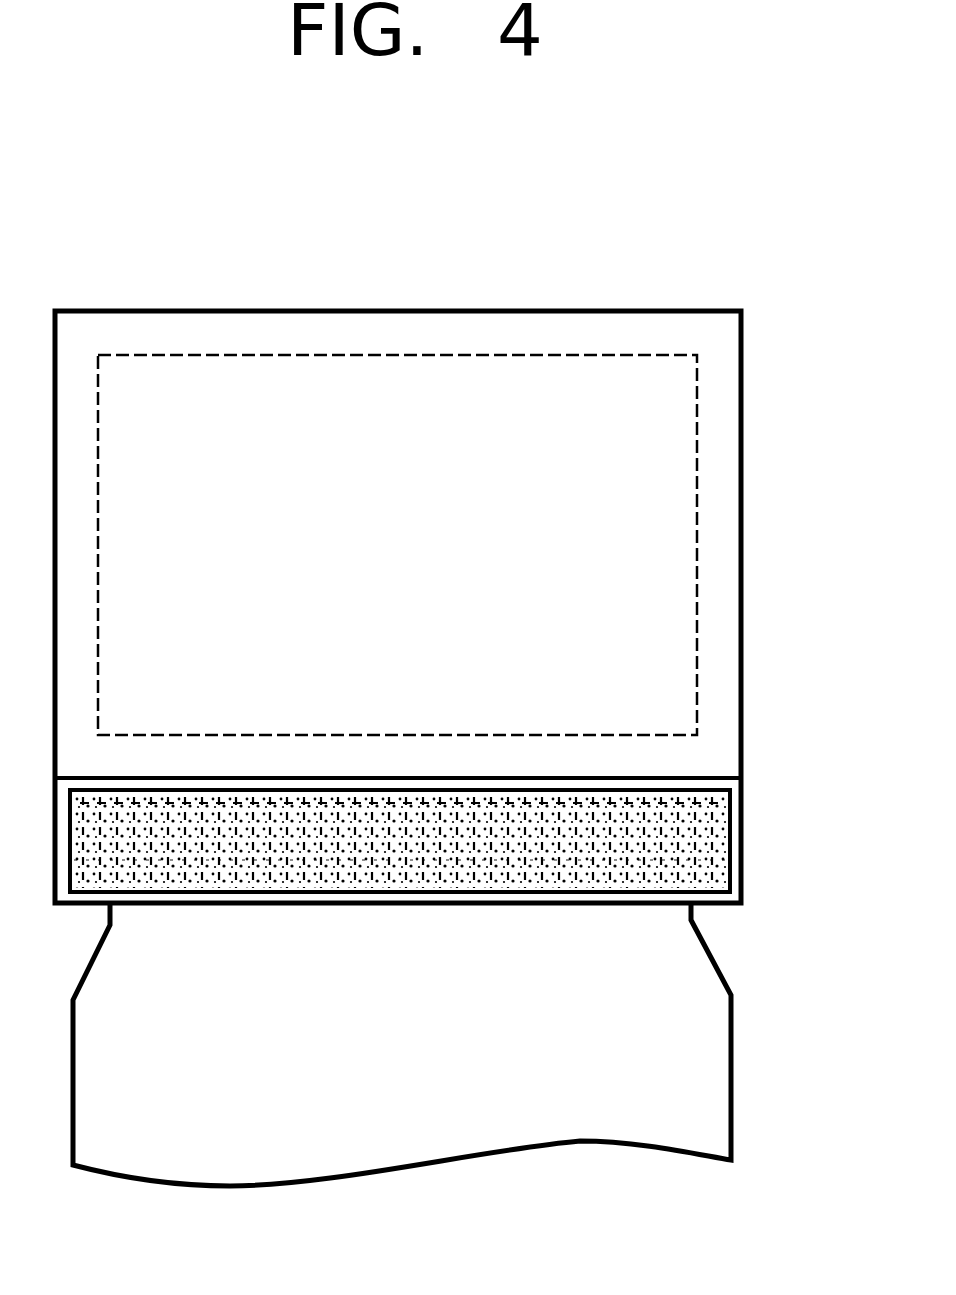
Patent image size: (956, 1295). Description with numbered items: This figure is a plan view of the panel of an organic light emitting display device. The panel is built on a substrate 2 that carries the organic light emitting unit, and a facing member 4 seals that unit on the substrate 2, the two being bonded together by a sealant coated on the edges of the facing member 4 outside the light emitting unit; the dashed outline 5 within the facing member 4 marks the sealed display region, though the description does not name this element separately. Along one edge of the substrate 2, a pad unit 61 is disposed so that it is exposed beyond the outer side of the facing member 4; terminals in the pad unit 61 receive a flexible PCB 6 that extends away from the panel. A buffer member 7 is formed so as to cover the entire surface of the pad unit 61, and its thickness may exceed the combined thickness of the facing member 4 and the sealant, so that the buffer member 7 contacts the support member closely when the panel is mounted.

The substrate 2 is at (740, 784).
The facing member 4 is at (728, 679).
The display region 5 is at (705, 442).
The flexible PCB 6 is at (711, 1078).
The buffer member 7 is at (712, 807).
The pad unit 61 is at (703, 858).